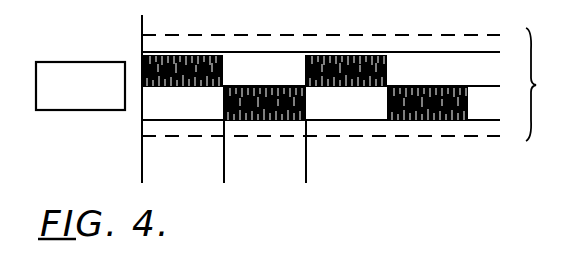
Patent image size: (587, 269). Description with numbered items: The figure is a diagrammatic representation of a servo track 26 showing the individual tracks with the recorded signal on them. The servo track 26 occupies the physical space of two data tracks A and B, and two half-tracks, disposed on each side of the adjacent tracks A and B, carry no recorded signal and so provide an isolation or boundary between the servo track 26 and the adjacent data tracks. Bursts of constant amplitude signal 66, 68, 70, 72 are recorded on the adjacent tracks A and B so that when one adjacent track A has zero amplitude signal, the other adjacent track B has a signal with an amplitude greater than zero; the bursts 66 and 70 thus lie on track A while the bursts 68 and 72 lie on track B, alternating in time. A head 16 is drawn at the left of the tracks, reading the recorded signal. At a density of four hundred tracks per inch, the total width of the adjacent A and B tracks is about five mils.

The head 16 is at (92, 62).
The servo track 26 is at (351, 102).
The burst of constant amplitude signal 66 is at (181, 55).
The burst of constant amplitude signal 68 is at (268, 120).
The burst of constant amplitude signal 70 is at (347, 55).
The burst of constant amplitude signal 72 is at (437, 120).